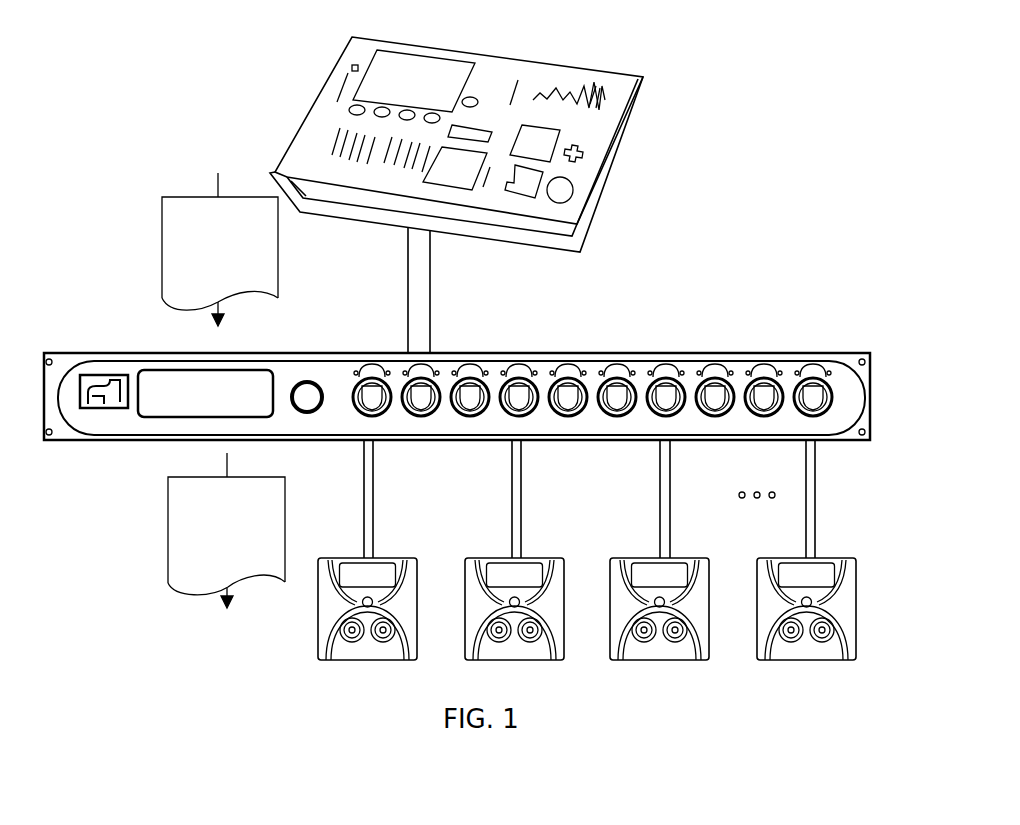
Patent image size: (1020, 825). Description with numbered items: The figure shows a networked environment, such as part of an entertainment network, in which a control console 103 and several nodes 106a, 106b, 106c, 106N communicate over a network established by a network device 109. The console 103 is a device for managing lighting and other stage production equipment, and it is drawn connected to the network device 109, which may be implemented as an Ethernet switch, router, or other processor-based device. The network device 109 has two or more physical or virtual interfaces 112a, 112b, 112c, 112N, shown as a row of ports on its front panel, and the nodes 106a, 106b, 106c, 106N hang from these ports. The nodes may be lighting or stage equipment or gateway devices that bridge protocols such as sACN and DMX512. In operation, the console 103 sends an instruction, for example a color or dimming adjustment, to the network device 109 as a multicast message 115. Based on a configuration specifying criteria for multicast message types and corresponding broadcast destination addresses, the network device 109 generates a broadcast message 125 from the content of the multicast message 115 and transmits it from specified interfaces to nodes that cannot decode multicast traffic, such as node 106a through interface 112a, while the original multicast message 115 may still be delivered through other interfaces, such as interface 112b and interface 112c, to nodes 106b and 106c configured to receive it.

The control console 103 is at (636, 134).
The network device 109 is at (700, 353).
The interface 112a is at (388, 421).
The interface 112b is at (535, 421).
The interface 112c is at (682, 421).
The interface 112N is at (824, 421).
The node 106a is at (432, 539).
The node 106b is at (563, 558).
The node 106c is at (708, 558).
The node 106N is at (851, 558).
The multicast message 115 is at (208, 275).
The broadcast message 125 is at (214, 557).